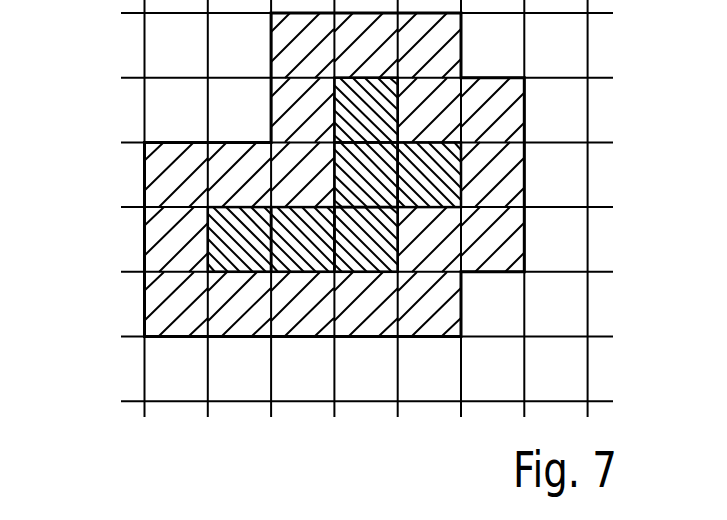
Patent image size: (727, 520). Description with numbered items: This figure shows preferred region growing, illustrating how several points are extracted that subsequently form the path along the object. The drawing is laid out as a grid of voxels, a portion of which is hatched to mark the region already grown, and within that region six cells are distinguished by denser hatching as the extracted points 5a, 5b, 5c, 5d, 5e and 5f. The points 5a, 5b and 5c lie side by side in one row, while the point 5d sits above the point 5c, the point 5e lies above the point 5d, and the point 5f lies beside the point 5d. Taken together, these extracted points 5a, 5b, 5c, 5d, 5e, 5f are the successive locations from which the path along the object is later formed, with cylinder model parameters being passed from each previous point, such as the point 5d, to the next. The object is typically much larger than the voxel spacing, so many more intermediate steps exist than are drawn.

The extracted point 5a is at (238, 240).
The extracted point 5b is at (302, 240).
The extracted point 5c is at (363, 240).
The extracted point 5d is at (350, 175).
The extracted point 5e is at (365, 108).
The extracted point 5f is at (430, 175).